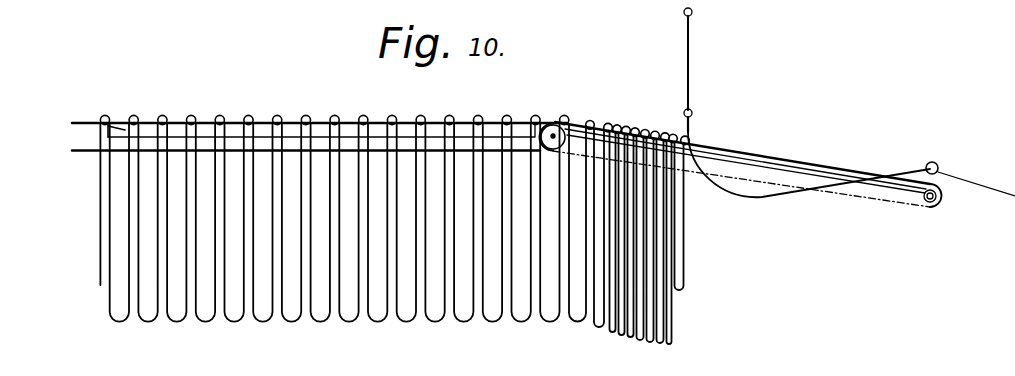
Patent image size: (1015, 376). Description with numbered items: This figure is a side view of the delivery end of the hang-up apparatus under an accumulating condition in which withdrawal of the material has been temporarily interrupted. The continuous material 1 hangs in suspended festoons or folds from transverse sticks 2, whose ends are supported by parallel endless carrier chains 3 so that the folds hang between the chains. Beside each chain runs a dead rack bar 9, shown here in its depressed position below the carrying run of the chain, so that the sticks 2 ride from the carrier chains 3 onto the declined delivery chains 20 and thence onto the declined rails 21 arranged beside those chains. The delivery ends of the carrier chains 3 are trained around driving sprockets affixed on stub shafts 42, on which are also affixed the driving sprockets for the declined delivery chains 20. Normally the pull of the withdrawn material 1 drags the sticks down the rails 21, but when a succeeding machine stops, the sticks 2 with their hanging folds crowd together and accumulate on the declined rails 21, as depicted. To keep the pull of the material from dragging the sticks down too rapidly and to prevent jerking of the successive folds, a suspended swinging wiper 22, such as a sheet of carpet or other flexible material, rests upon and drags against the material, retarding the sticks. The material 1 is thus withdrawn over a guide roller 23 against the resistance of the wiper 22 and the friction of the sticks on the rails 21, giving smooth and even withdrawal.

The continuous material 1 is at (100, 233).
The sticks 2 is at (304, 118).
The endless chains 3 is at (94, 122).
The dead rack bars 9 is at (379, 132).
The stub shafts 42 is at (552, 127).
The declined delivery chains 20 is at (868, 181).
The declined rails 21 is at (888, 176).
The swinging wiper 22 is at (693, 126).
The guide roller 23 is at (935, 163).